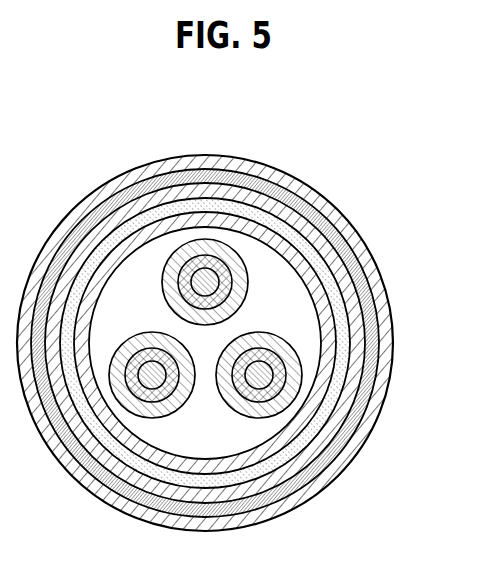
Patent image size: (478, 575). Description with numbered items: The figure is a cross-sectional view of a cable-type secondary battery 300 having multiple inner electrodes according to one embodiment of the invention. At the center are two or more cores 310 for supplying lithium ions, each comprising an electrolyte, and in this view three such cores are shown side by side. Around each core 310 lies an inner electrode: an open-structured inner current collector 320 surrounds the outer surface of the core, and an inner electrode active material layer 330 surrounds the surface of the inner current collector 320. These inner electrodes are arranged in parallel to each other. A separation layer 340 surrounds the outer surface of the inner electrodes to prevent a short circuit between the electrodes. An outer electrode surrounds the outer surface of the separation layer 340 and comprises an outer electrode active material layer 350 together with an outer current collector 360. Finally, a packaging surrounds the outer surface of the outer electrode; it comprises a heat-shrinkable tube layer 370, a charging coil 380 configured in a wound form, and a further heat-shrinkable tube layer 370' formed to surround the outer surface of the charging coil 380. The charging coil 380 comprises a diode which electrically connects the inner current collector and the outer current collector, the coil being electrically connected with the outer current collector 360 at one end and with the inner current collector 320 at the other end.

The cable-type secondary battery 300 is at (232, 325).
The core for supplying lithium ions 310 is at (204, 273).
The inner current collector 320 is at (217, 263).
The inner electrode active material layer 330 is at (233, 255).
The separation layer 340 is at (277, 272).
The outer electrode active material layer 350 is at (307, 270).
The outer current collector 360 is at (333, 282).
The heat-shrinkable tube layer 370 is at (239, 343).
The charging coil 380 is at (370, 317).
The heat-shrinkable tube layer 370' is at (232, 343).